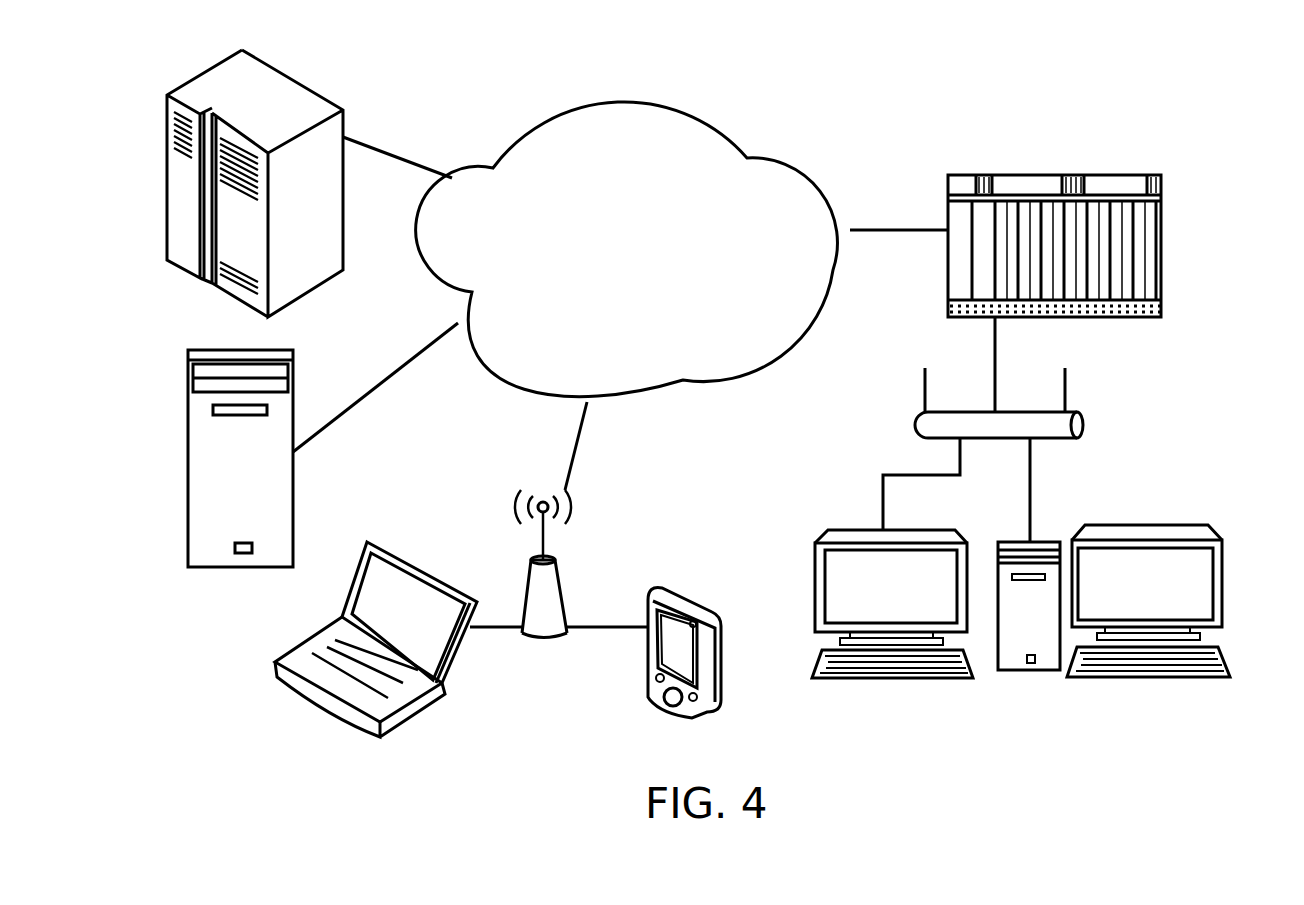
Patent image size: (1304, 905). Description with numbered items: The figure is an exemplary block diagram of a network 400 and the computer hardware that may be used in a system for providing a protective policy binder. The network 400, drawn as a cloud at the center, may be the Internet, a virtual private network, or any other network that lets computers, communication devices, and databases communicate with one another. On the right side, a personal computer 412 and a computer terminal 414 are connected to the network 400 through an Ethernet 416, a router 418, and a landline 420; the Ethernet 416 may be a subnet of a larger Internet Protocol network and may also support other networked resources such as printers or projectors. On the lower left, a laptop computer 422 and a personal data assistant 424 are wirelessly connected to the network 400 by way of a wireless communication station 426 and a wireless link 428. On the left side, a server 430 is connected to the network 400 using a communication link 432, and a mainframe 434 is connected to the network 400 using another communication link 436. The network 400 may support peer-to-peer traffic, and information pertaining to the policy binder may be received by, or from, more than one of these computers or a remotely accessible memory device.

The network 400 is at (866, 102).
The personal computer 412 is at (1017, 675).
The computer terminal 414 is at (872, 680).
The Ethernet 416 is at (1067, 442).
The router 418 is at (1085, 317).
The landline 420 is at (865, 232).
The laptop computer 422 is at (408, 723).
The personal data assistant 424 is at (713, 713).
The wireless communication station 426 is at (545, 638).
The wireless link 428 is at (580, 445).
The server 430 is at (198, 567).
The communication link 432 is at (323, 430).
The mainframe 434 is at (313, 292).
The communication link 436 is at (383, 155).